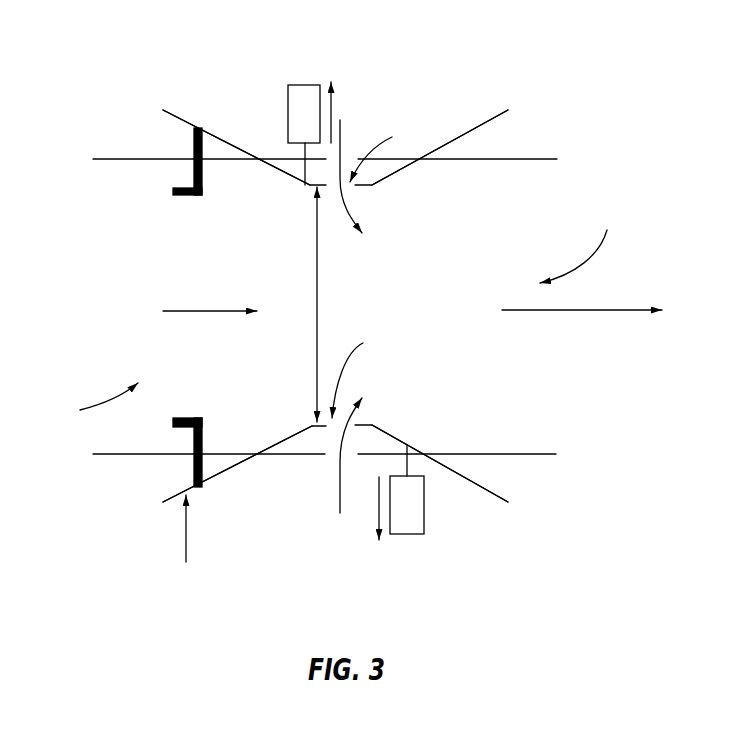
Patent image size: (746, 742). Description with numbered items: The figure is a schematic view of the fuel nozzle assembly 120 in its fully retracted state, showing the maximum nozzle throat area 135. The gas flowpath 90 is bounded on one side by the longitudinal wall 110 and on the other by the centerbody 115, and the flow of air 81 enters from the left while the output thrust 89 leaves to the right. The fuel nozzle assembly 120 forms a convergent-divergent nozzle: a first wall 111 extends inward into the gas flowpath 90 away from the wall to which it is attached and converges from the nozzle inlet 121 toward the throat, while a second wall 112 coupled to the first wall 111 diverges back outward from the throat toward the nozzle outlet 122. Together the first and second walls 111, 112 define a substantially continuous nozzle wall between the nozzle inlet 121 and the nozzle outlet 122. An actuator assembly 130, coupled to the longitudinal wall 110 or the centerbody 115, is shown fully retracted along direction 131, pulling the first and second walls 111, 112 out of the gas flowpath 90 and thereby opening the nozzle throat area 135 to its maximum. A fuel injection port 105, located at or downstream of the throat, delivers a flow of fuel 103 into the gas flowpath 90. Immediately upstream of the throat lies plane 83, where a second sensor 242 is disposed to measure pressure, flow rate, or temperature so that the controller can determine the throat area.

The gas flowpath 90 is at (115, 320).
The flow of air 81 is at (207, 309).
The plane 83 is at (186, 525).
The output thrust 89 is at (567, 312).
The flow of fuel 103 is at (346, 140).
The fuel injection port 105 is at (381, 268).
The longitudinal wall 110 is at (493, 161).
The first wall 111 is at (196, 128).
The second wall 112 is at (497, 118).
The centerbody 115 is at (515, 453).
The fuel nozzle assembly 120 is at (453, 127).
The nozzle inlet 121 is at (90, 406).
The nozzle outlet 122 is at (581, 240).
The actuator assembly 130 is at (305, 88).
The direction 131 is at (334, 102).
The nozzle throat area 135 is at (317, 318).
The second sensor 242 is at (193, 165).